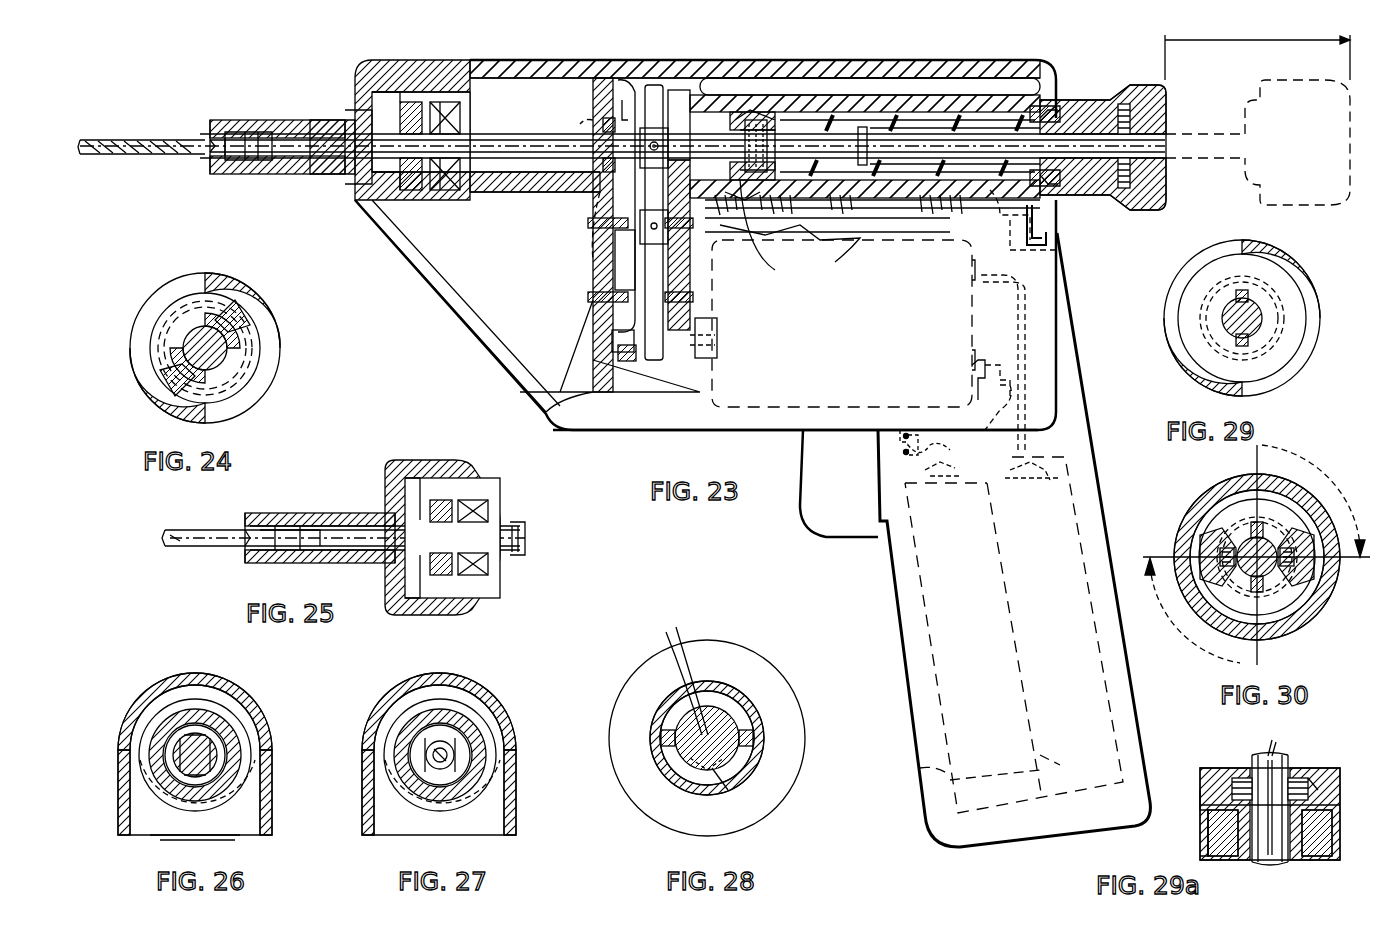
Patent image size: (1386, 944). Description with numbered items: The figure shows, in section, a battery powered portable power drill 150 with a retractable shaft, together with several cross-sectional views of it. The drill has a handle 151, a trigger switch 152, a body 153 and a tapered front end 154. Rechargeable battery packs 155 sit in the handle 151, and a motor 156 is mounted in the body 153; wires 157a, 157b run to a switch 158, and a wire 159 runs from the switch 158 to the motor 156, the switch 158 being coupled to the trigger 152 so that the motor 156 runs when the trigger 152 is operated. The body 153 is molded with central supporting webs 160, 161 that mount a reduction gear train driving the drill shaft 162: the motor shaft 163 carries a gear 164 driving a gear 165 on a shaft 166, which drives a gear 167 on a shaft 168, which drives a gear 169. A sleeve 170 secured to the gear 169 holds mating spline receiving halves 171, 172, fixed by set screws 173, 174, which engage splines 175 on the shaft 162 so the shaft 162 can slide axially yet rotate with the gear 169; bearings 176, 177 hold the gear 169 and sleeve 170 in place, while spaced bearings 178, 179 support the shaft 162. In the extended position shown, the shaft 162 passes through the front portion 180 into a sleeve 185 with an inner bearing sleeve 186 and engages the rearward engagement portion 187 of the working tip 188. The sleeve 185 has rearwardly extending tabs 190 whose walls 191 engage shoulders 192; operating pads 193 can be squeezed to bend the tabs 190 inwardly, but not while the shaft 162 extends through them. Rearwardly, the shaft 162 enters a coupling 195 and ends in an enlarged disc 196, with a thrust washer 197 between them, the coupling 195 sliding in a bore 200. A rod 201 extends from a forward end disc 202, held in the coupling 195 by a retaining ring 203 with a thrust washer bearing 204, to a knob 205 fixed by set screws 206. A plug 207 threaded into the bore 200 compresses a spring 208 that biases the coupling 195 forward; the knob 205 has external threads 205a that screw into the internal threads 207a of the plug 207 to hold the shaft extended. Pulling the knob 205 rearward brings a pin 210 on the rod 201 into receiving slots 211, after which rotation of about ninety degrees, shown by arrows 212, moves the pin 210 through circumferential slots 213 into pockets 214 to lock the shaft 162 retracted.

In FIG. 23, the power drill 150 is at (797, 436).
In FIG. 23, the handle 151 is at (940, 822).
In FIG. 23, the trigger switch 152 is at (800, 512).
In FIG. 23, the body 153 is at (690, 415).
In FIG. 23, the tapered front end 154 is at (462, 340).
In FIG. 23, the rechargeable battery packs 155 is at (940, 775).
In FIG. 23, the motor 156 is at (1010, 290).
In FIG. 23, the wire 157a is at (1055, 475).
In FIG. 23, the wire 157b is at (952, 488).
In FIG. 23, the switch 158 is at (940, 460).
In FIG. 23, the wire 159 is at (970, 382).
In FIG. 23, the central supporting web 160 is at (593, 246).
In FIG. 23, the central supporting web 161 is at (717, 330).
In FIG. 23, the drill shaft 162 is at (490, 170).
In FIG. 24, the drill shaft 162 is at (183, 345).
In FIG. 25, the drill shaft 162 is at (520, 558).
In FIG. 26, the drill shaft 162 is at (190, 730).
In FIG. 28, the drill shaft 162 is at (695, 770).
In FIG. 23, the motor shaft 163 is at (612, 335).
In FIG. 23, the gear 164 is at (618, 355).
In FIG. 23, the gear 165 is at (715, 345).
In FIG. 23, the shaft 166 is at (588, 297).
In FIG. 23, the gear 167 is at (620, 268).
In FIG. 23, the shaft 168 is at (588, 223).
In FIG. 23, the gear 169 is at (630, 80).
In FIG. 23, the sleeve 170 is at (600, 78).
In FIG. 28, the sleeve 170 is at (752, 722).
In FIG. 28, the spline receiving half 171 is at (728, 770).
In FIG. 28, the spline receiving half 172 is at (695, 765).
In FIG. 28, the set screw 173 is at (752, 738).
In FIG. 28, the set screw 174 is at (662, 738).
In FIG. 23, the splines 175 is at (530, 170).
In FIG. 28, the splines 175 is at (675, 668).
In FIG. 23, the bearing 176 is at (603, 124).
In FIG. 23, the bearing 177 is at (655, 85).
In FIG. 23, the bearing 178 is at (680, 92).
In FIG. 23, the bearing 179 is at (445, 102).
In FIG. 23, the front portion 180 is at (372, 212).
In FIG. 25, the front portion 180 is at (388, 575).
In FIG. 26, the front portion 180 is at (205, 686).
In FIG. 27, the front portion 180 is at (430, 690).
In FIG. 23, the sleeve 185 is at (232, 120).
In FIG. 25, the sleeve 185 is at (325, 513).
In FIG. 23, the inner bearing sleeve 186 is at (230, 158).
In FIG. 23, the rearward engagement portion 187 is at (212, 150).
In FIG. 25, the rearward engagement portion 187 is at (245, 545).
In FIG. 23, the working tip 188 is at (145, 140).
In FIG. 25, the working tip 188 is at (215, 530).
In FIG. 27, the working tip 188 is at (455, 740).
In FIG. 23, the tabs 190 is at (365, 108).
In FIG. 26, the tabs 190 is at (185, 790).
In FIG. 27, the tabs 190 is at (420, 730).
In FIG. 23, the walls 191 is at (408, 190).
In FIG. 26, the walls 191 is at (225, 725).
In FIG. 27, the walls 191 is at (455, 720).
In FIG. 23, the shoulders 192 is at (378, 178).
In FIG. 23, the operating pads 193 is at (325, 174).
In FIG. 23, the coupling 195 is at (745, 112).
In FIG. 24, the coupling 195 is at (148, 312).
In FIG. 23, the enlarged disc 196 is at (768, 120).
In FIG. 24, the enlarged disc 196 is at (195, 385).
In FIG. 23, the thrust washer 197 is at (758, 120).
In FIG. 24, the thrust washer 197 is at (165, 385).
In FIG. 23, the bore 200 is at (1013, 220).
In FIG. 23, the rod 201 is at (907, 140).
In FIG. 29, the rod 201 is at (1255, 305).
In FIG. 30, the rod 201 is at (1240, 577).
In FIG. 29a, the rod 201 is at (1282, 860).
In FIG. 23, the forward end disc 202 is at (840, 265).
In FIG. 23, the retaining ring 203 is at (872, 96).
In FIG. 23, the thrust washer bearing 204 is at (757, 234).
In FIG. 24, the thrust washer bearing 204 is at (250, 378).
In FIG. 23, the knob 205 is at (1165, 200).
In FIG. 29a, the knob 205 is at (1315, 860).
In FIG. 23, the external threads 205a is at (1070, 118).
In FIG. 29a, the external threads 205a is at (1200, 805).
In FIG. 23, the set screws 206 is at (1135, 175).
In FIG. 23, the plug 207 is at (1062, 186).
In FIG. 29, the plug 207 is at (1290, 305).
In FIG. 30, the plug 207 is at (1218, 508).
In FIG. 29a, the plug 207 is at (1210, 825).
In FIG. 29a, the internal threads 207a is at (1202, 840).
In FIG. 23, the spring 208 is at (900, 210).
In FIG. 23, the pin 210 is at (940, 100).
In FIG. 30, the pin 210 is at (1305, 580).
In FIG. 23, the receiving slots 211 is at (985, 128).
In FIG. 29, the receiving slots 211 is at (1250, 346).
In FIG. 30, the receiving slots 211 is at (1262, 592).
In FIG. 29a, the receiving slots 211 is at (1270, 755).
In FIG. 23, the arrows 212 is at (1060, 110).
In FIG. 30, the arrows 212 is at (1300, 448).
In FIG. 30, the circumferential slots 213 is at (1222, 558).
In FIG. 29a, the circumferential slots 213 is at (1318, 790).
In FIG. 29a, the pockets 214 is at (1300, 778).